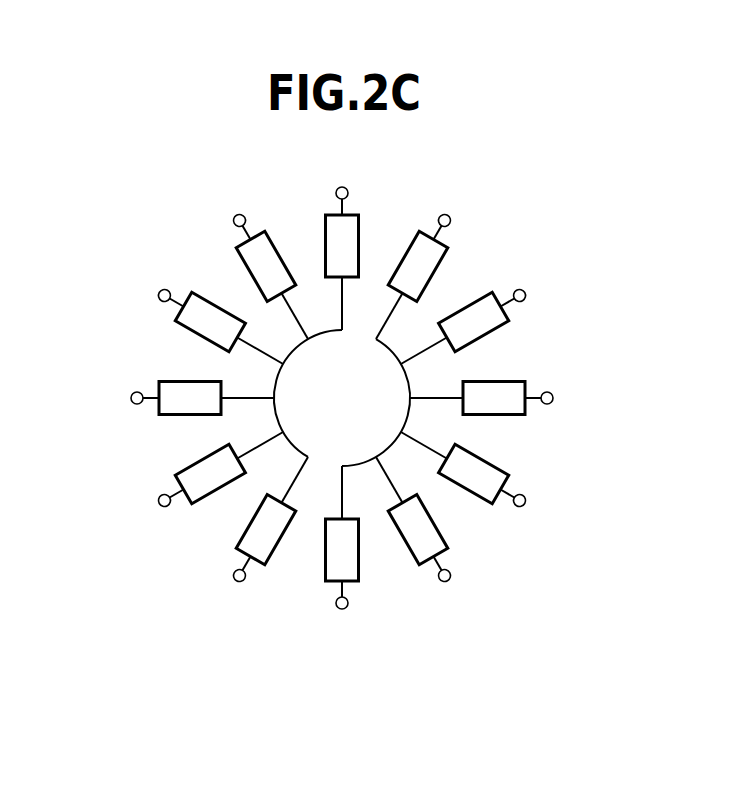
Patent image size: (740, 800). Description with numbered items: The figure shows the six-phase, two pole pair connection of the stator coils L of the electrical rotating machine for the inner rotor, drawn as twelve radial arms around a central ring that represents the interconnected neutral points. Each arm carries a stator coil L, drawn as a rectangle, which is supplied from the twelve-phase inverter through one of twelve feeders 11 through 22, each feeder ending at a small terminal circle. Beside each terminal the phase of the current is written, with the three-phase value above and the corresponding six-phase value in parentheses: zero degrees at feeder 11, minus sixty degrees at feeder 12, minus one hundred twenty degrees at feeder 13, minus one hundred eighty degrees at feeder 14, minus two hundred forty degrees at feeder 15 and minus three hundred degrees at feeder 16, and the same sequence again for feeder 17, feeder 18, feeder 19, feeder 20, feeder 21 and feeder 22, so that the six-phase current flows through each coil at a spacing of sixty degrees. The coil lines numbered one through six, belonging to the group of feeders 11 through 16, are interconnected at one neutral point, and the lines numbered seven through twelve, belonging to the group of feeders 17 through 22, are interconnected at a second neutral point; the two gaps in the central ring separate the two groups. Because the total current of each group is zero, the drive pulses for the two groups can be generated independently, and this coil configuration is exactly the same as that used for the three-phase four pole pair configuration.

The feeder 11 is at (350, 193).
The feeder 12 is at (240, 214).
The feeder 13 is at (165, 289).
The feeder 14 is at (137, 392).
The feeder 15 is at (159, 498).
The feeder 16 is at (234, 572).
The feeder 17 is at (336, 603).
The feeder 18 is at (450, 572).
The feeder 19 is at (525, 498).
The feeder 20 is at (547, 392).
The feeder 21 is at (519, 289).
The feeder 22 is at (444, 214).